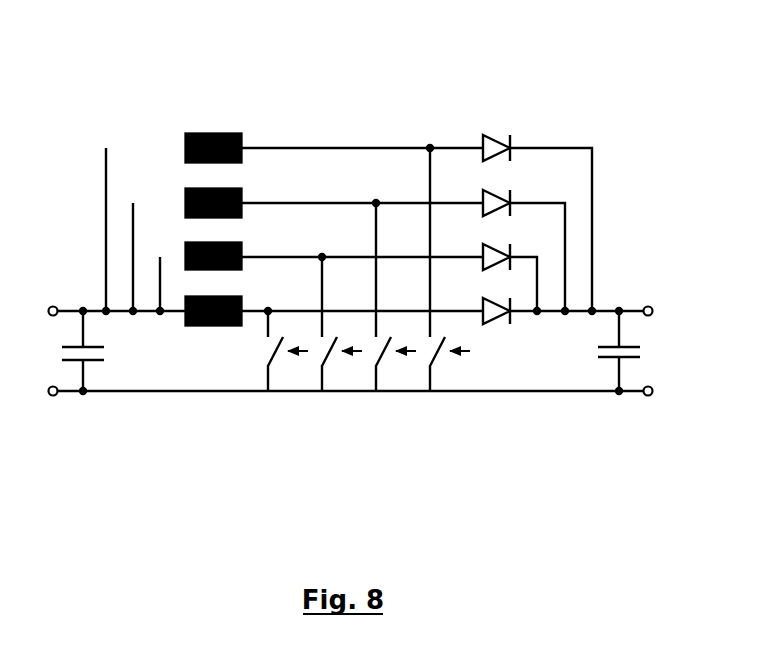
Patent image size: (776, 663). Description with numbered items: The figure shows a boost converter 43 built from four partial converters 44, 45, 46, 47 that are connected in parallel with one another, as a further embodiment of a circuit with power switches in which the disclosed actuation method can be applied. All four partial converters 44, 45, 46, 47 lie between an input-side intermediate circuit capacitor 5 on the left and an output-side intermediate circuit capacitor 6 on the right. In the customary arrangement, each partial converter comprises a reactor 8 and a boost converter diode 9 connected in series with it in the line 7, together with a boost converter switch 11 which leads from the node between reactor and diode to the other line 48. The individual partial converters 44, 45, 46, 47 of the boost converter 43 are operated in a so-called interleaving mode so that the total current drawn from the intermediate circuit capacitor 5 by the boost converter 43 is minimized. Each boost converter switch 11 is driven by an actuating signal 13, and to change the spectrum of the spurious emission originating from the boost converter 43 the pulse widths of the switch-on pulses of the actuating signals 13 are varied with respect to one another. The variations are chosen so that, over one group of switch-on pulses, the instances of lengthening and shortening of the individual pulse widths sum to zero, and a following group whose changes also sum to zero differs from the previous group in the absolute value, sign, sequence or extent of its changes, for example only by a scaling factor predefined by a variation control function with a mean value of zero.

The input-side intermediate circuit capacitor 5 is at (91, 373).
The output-side intermediate circuit capacitor 6 is at (609, 364).
The line 7 is at (92, 307).
The reactor 8 is at (185, 296).
The boost converter diode 9 is at (489, 266).
The boost converter switch 11 is at (278, 363).
The actuating signals 13 is at (305, 354).
The boost converter 43 is at (656, 242).
The partial converter 44 is at (604, 146).
The partial converter 45 is at (577, 201).
The partial converter 46 is at (550, 256).
The partial converter 47 is at (485, 342).
The other line 48 is at (192, 393).